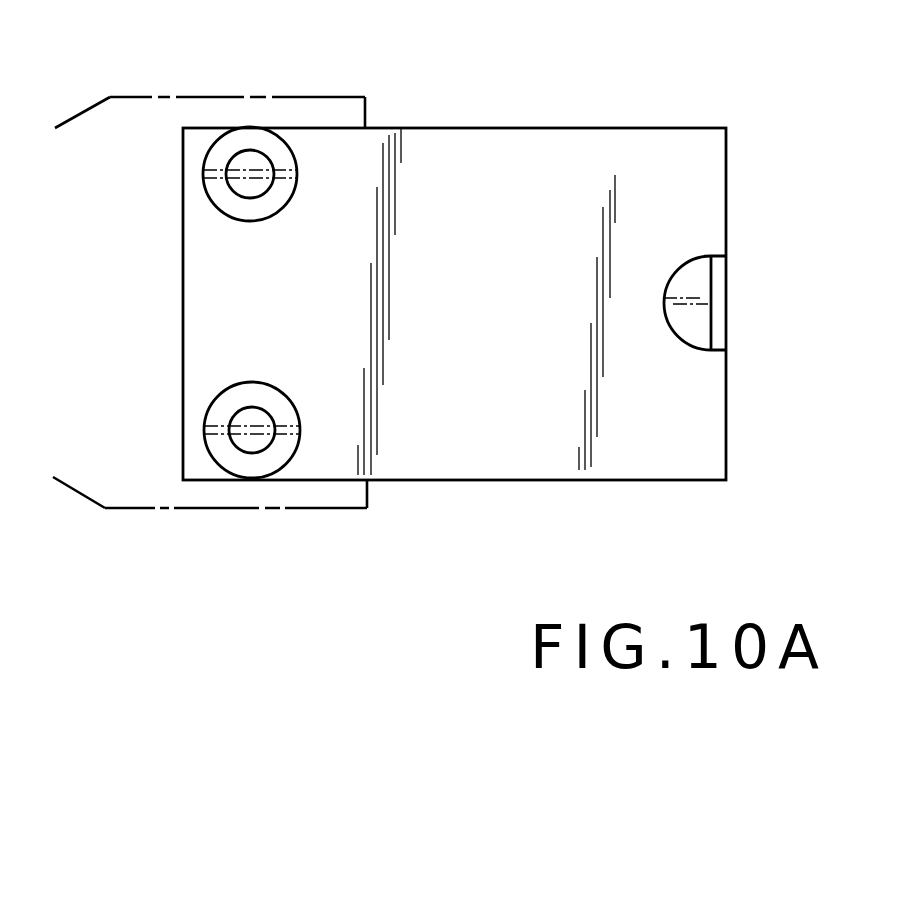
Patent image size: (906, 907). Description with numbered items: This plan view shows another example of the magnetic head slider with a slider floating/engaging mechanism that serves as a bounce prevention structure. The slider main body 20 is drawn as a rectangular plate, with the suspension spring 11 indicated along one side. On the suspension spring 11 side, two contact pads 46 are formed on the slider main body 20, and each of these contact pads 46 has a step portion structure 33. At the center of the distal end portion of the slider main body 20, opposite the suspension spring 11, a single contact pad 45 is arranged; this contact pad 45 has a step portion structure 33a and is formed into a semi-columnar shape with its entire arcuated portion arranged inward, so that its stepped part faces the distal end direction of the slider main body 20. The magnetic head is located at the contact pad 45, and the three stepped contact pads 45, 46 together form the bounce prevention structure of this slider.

The suspension spring 11 is at (118, 510).
The slider main body 20 is at (567, 127).
The step portion structure 33 is at (227, 202).
The step portion structure 33a is at (717, 320).
The contact pad 45 is at (693, 272).
The contact pad 46 is at (213, 146).